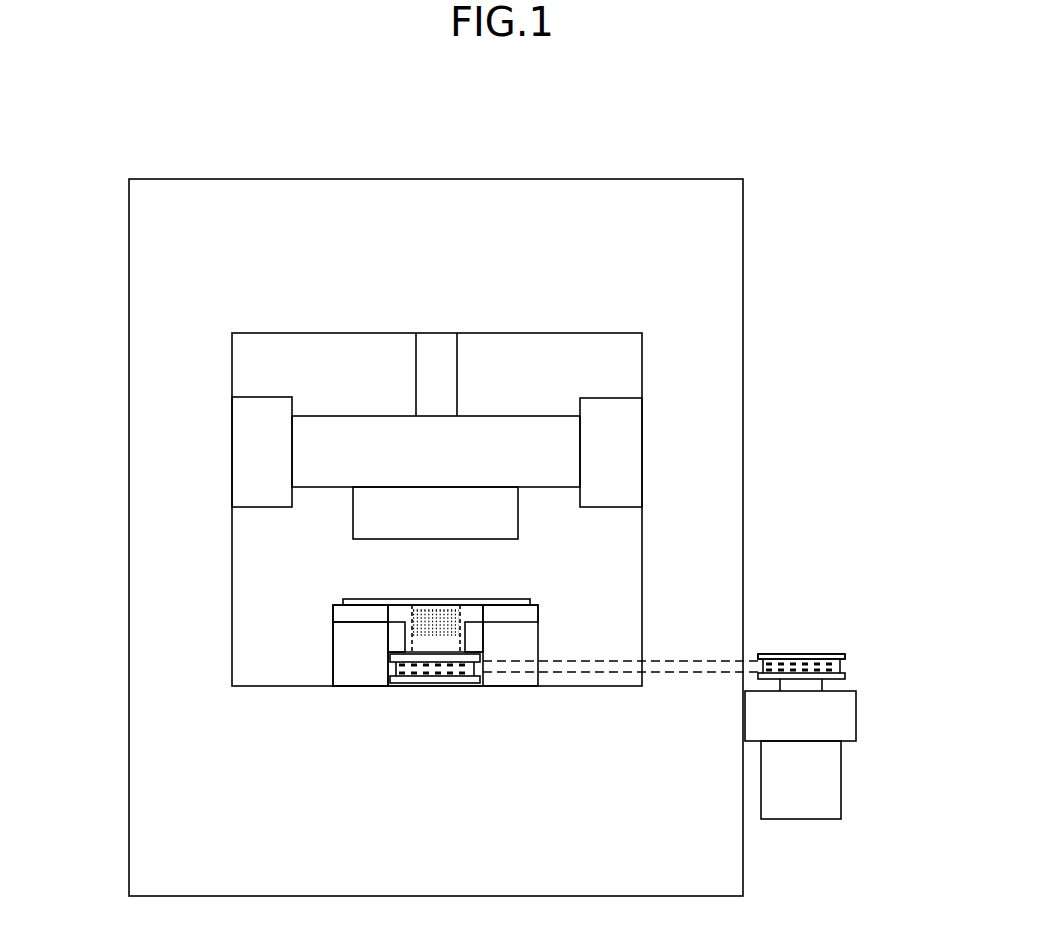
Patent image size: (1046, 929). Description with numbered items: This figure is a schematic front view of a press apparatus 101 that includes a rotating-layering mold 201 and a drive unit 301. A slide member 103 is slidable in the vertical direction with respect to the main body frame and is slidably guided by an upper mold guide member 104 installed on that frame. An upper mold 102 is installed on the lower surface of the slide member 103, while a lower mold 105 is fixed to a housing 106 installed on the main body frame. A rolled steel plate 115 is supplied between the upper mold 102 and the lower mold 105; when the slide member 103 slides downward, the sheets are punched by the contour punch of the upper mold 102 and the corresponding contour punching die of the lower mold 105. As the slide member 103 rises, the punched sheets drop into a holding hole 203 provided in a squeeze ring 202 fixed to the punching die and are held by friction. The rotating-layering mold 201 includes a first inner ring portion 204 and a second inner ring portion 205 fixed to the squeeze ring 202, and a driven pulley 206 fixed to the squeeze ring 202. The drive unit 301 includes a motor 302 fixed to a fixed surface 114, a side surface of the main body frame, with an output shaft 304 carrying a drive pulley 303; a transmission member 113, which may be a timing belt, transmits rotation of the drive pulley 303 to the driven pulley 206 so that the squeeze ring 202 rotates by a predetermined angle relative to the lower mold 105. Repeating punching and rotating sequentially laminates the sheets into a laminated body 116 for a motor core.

The press apparatus 101 is at (520, 161).
The upper mold 102 is at (457, 517).
The slide member 103 is at (508, 435).
The upper mold guide member 104 is at (618, 437).
The lower mold 105 is at (363, 613).
The housing 106 is at (353, 673).
The transmission member 113 is at (665, 662).
The fixed surface 114 is at (744, 528).
The rolled steel sheet 115 is at (375, 598).
The laminated body 116 is at (440, 622).
The rotating-layering mold 201 is at (370, 576).
The squeeze ring 202 is at (473, 615).
The holding hole 203 is at (528, 598).
The first inner ring portion 204 is at (397, 632).
The second inner ring portion 205 is at (397, 647).
The driven pulley 206 is at (413, 680).
The drive unit 301 is at (864, 636).
The motor 302 is at (800, 786).
The drive pulley 303 is at (847, 676).
The output shaft 304 is at (800, 690).